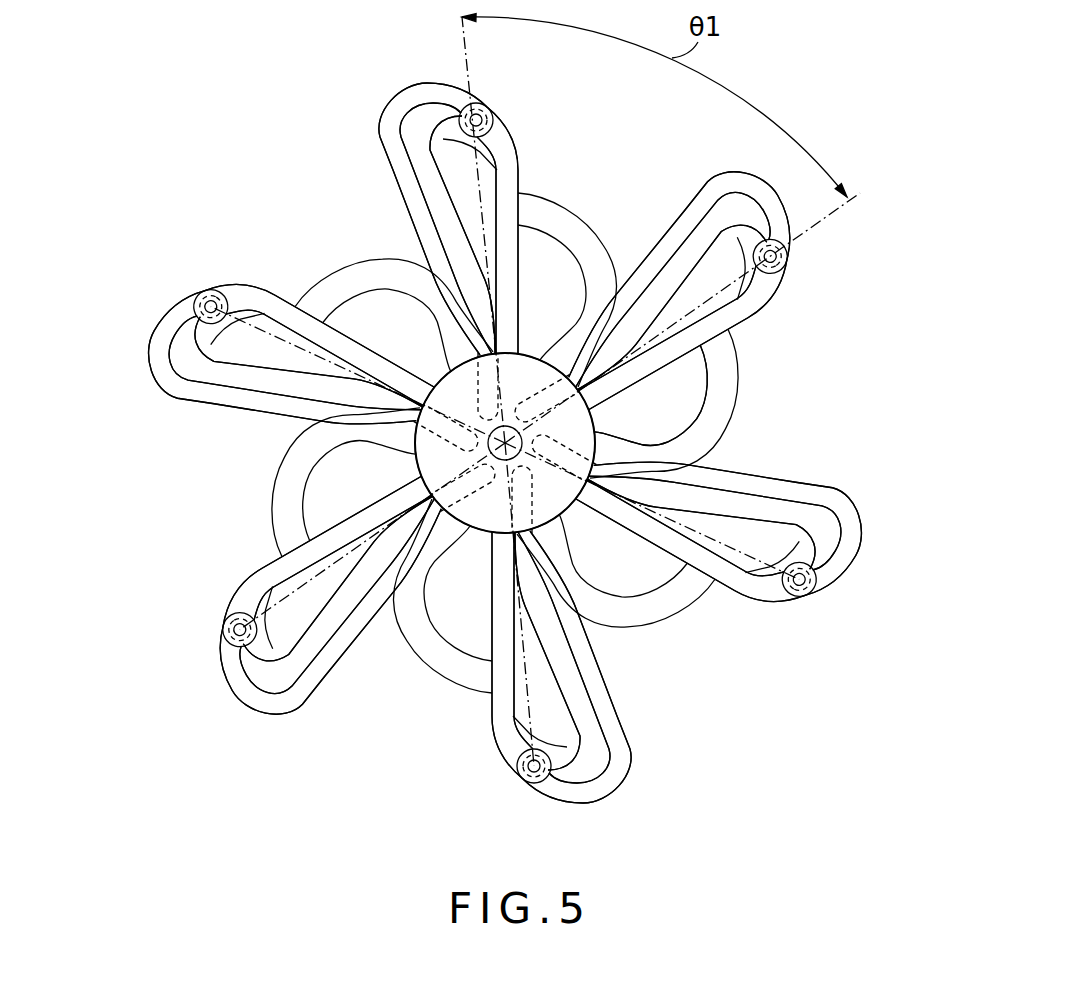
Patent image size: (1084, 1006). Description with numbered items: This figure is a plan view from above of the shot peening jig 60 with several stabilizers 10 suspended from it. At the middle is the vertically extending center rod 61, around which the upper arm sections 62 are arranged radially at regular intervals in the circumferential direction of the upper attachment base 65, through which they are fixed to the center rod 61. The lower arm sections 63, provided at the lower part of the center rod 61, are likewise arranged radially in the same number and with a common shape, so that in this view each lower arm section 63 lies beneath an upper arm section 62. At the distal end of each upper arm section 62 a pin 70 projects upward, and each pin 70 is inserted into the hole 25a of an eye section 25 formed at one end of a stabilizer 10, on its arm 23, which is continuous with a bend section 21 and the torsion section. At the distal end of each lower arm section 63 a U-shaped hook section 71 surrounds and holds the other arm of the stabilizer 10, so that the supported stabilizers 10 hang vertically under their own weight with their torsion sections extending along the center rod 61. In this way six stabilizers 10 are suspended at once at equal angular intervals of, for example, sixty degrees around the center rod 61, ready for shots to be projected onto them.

The stabilizer 10 is at (443, 182).
The bend section 21 is at (515, 352).
The arm 23 is at (603, 242).
The eye section 25 is at (494, 120).
The hole 25a is at (490, 140).
The shot peening jig 60 is at (358, 105).
The center rod 61 is at (537, 356).
The upper arm section 62 is at (518, 233).
The lower arm section 63 is at (397, 180).
The upper attachment base 65 is at (628, 470).
The pin 70 is at (486, 106).
The hook section 71 is at (425, 83).